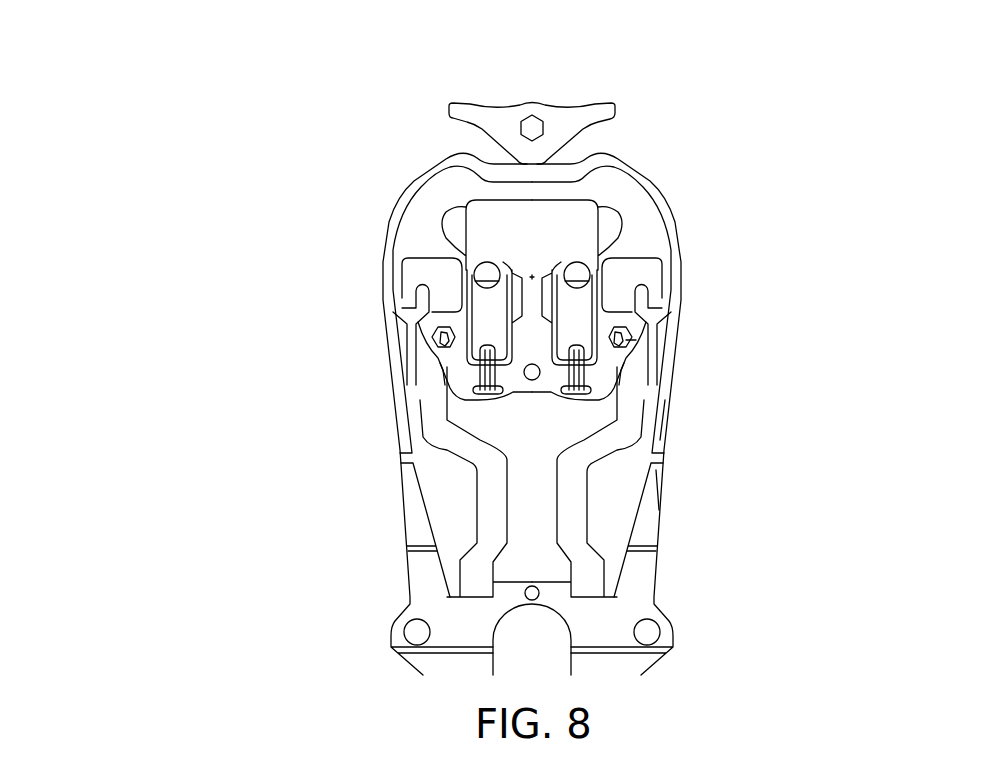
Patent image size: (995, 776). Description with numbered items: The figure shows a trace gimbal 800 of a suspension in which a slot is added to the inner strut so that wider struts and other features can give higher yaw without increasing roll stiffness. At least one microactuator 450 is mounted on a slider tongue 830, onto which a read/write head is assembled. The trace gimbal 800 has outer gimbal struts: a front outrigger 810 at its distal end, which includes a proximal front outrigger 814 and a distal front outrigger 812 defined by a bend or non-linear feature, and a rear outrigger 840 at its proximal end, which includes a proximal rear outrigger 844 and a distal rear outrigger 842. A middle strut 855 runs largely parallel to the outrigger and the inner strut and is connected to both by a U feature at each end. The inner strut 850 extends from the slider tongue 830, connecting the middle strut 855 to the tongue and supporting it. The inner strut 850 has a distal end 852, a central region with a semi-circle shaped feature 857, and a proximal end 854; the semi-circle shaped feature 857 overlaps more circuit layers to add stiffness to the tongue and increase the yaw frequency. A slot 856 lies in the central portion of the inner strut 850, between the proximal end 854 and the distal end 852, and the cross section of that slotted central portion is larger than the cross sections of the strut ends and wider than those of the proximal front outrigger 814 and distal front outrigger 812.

The trace gimbal 800 is at (243, 202).
The front outrigger 810 is at (672, 202).
The distal front outrigger 812 is at (640, 171).
The proximal front outrigger 814 is at (672, 237).
The distal end 852 is at (640, 268).
The middle strut 855 is at (653, 293).
The inner strut 850 is at (616, 328).
The semi-circle shaped feature 857 is at (613, 340).
The slot 856 is at (620, 341).
The proximal end 854 is at (622, 365).
The slider tongue 830 is at (520, 343).
The distal rear outrigger 842 is at (663, 403).
The rear outrigger 840 is at (700, 432).
The proximal rear outrigger 844 is at (659, 492).
The microactuator 450 is at (480, 320).